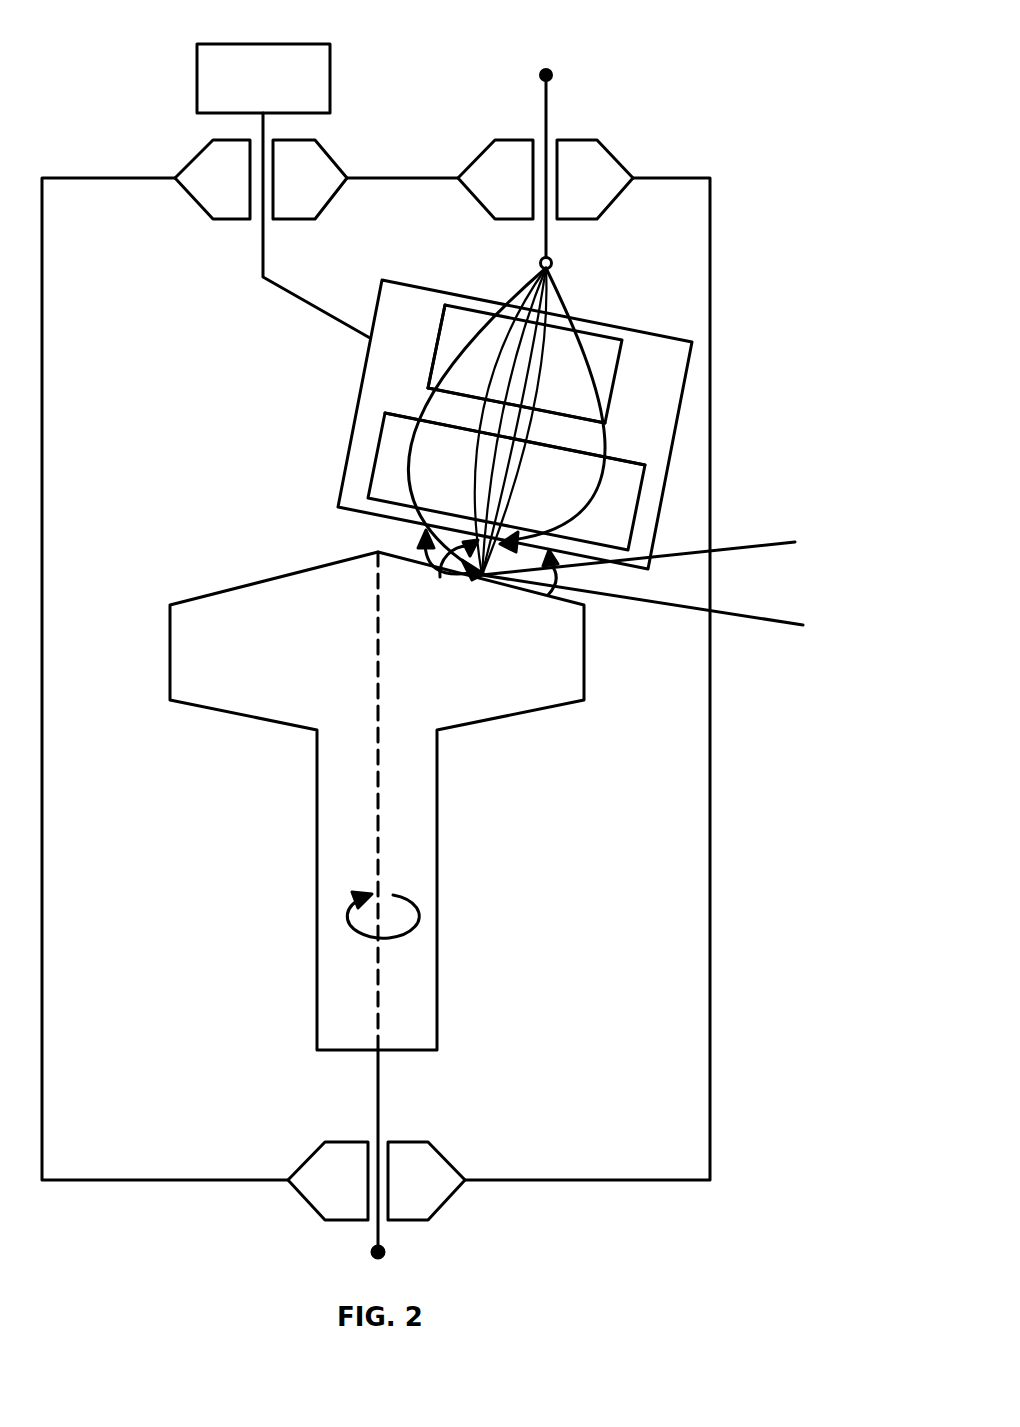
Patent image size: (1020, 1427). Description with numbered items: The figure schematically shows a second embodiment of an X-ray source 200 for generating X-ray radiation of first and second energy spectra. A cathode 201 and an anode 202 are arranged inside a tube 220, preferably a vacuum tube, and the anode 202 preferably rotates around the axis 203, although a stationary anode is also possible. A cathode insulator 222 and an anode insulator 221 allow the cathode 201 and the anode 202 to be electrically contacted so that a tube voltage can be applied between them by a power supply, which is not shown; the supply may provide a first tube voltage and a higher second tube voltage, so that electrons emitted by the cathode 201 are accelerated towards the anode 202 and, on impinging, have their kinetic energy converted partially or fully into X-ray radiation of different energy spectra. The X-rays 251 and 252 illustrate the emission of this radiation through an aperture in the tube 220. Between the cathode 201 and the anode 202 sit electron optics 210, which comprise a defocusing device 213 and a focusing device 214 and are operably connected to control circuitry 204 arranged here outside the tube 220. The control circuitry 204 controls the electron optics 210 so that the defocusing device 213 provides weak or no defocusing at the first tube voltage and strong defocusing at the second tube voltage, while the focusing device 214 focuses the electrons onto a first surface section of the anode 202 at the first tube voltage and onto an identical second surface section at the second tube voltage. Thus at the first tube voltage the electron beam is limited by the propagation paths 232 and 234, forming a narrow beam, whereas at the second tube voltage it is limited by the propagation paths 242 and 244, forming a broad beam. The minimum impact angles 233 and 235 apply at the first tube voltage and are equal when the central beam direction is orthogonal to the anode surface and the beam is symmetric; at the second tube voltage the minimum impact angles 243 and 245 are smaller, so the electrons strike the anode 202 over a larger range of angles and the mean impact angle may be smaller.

The X-ray source 200 is at (115, 82).
The cathode 201 is at (552, 264).
The anode 202 is at (587, 663).
The axis 203 is at (395, 805).
The control circuitry 204 is at (330, 82).
The electron optics 210 is at (353, 418).
The defocusing device 213 is at (488, 298).
The focusing device 214 is at (377, 453).
The tube 220 is at (708, 948).
The anode insulator 221 is at (462, 1207).
The cathode insulator 222 is at (612, 157).
The propagation path 232 is at (450, 397).
The minimum impact angle 233 is at (417, 497).
The propagation path 234 is at (613, 437).
The minimum impact angle 235 is at (633, 533).
The propagation path 242 is at (453, 347).
The minimum impact angle 243 is at (407, 530).
The propagation path 244 is at (613, 377).
The minimum impact angle 245 is at (550, 578).
The X-rays 251 is at (790, 540).
The X-rays 252 is at (762, 620).